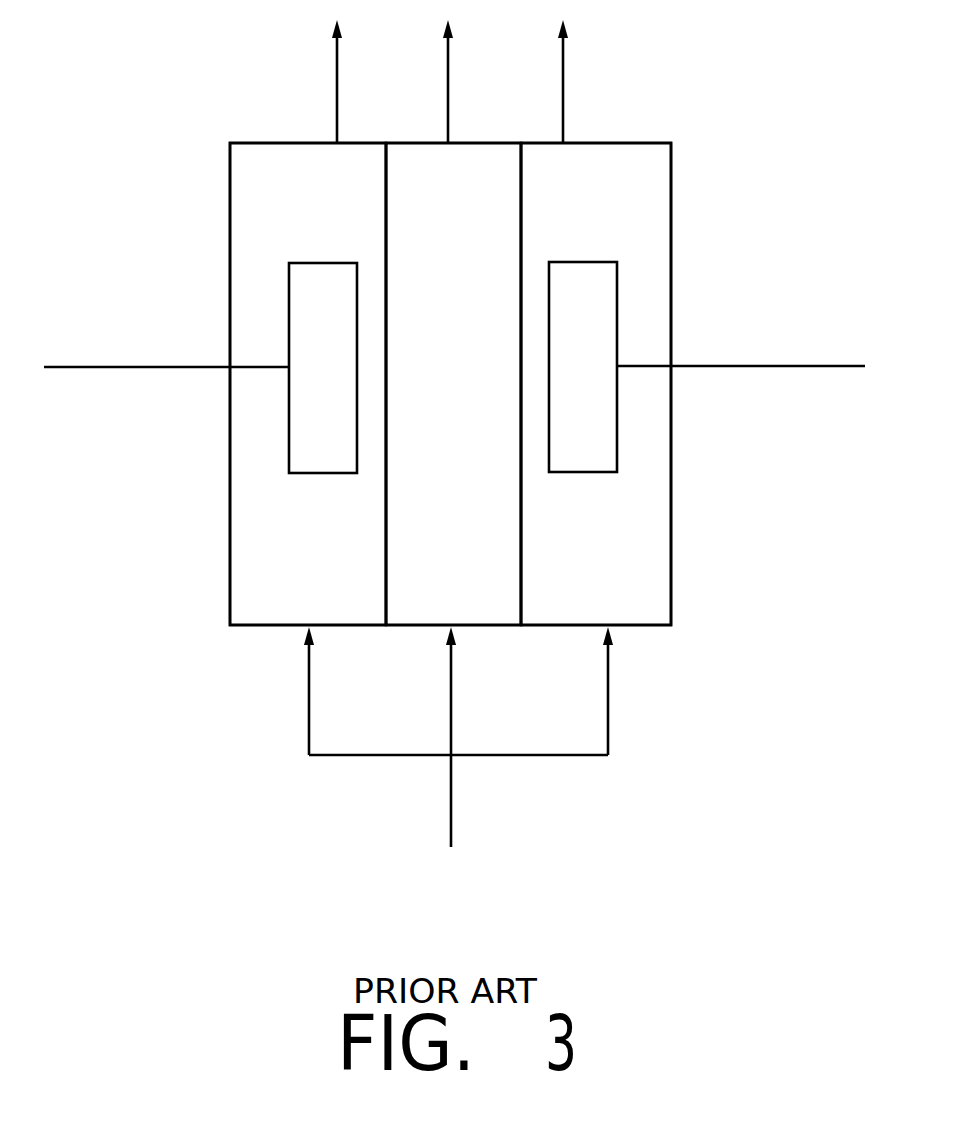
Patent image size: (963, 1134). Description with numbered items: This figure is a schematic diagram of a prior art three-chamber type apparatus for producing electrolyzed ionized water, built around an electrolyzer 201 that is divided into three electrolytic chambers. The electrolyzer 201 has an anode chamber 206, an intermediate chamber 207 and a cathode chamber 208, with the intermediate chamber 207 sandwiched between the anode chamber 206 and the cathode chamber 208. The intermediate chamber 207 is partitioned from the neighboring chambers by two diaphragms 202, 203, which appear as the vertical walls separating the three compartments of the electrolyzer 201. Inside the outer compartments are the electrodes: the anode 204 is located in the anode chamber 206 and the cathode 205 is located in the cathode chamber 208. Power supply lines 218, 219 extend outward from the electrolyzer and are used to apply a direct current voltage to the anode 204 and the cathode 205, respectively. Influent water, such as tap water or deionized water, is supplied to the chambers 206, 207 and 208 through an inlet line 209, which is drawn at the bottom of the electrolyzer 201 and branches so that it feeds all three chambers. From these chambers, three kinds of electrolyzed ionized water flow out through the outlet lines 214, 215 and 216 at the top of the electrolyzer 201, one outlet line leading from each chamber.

The electrolyzer 201 is at (217, 551).
The diaphragm 202 is at (522, 558).
The diaphragm 203 is at (386, 548).
The anode 204 is at (618, 282).
The cathode 205 is at (289, 304).
The anode chamber 206 is at (653, 491).
The intermediate chamber 207 is at (498, 204).
The cathode chamber 208 is at (243, 452).
The inlet line 209 is at (452, 793).
The outlet line 214 is at (565, 80).
The outlet line 215 is at (449, 80).
The outlet line 216 is at (336, 74).
The power supply line 218 is at (837, 363).
The power supply line 219 is at (63, 365).